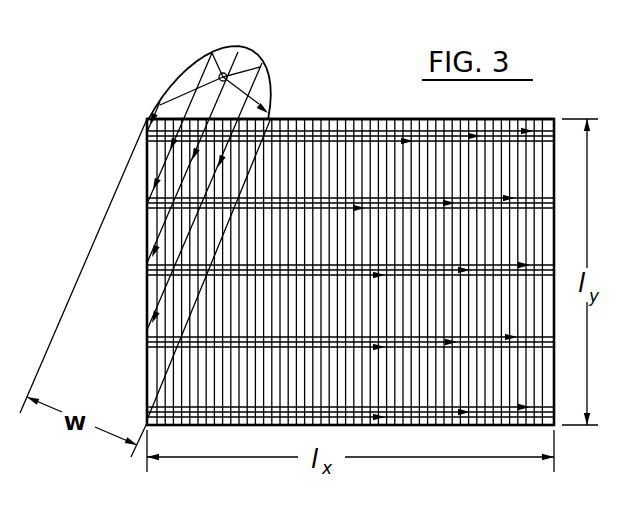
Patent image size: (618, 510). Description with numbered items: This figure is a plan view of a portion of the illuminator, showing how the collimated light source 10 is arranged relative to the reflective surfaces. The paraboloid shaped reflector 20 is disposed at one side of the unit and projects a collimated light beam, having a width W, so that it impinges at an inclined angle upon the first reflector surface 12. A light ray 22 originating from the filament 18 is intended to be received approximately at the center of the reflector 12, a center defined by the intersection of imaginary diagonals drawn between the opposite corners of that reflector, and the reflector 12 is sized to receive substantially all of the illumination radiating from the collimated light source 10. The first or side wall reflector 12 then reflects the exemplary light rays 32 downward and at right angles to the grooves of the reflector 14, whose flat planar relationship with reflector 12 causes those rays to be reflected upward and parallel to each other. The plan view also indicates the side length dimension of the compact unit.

The collimated light source 10 is at (262, 38).
The first reflector surface 12 is at (143, 313).
The reflector 14 is at (525, 119).
The filament 18 is at (221, 72).
The paraboloid shaped reflector 20 is at (272, 84).
The light ray 22 is at (163, 222).
The exemplary light rays 32 is at (328, 192).